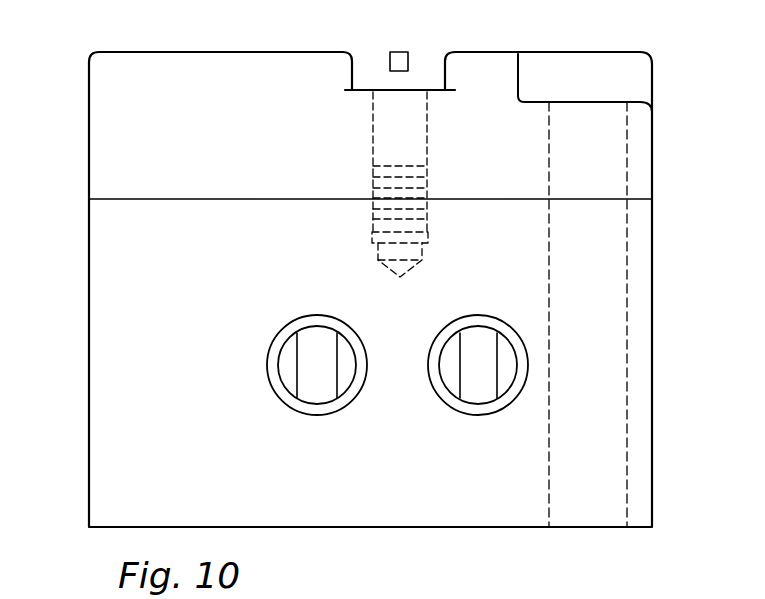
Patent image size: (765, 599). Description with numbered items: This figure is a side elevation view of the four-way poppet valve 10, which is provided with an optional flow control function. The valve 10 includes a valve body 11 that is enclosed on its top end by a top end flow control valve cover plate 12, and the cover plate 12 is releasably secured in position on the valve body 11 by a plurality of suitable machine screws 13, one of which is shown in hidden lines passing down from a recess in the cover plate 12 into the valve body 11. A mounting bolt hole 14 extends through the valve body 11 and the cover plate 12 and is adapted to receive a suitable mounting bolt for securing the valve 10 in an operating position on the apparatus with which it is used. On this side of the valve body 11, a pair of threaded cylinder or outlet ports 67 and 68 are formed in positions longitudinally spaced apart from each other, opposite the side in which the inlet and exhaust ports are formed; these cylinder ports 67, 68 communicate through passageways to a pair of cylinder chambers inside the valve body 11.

The four-way poppet valve 10 is at (88, 298).
The valve body 11 is at (110, 240).
The flow control valve cover plate 12 is at (111, 113).
The machine screw 13 is at (422, 63).
The mounting bolt hole 14 is at (622, 357).
The cylinder or outlet port 67 is at (473, 335).
The cylinder or outlet port 68 is at (300, 335).